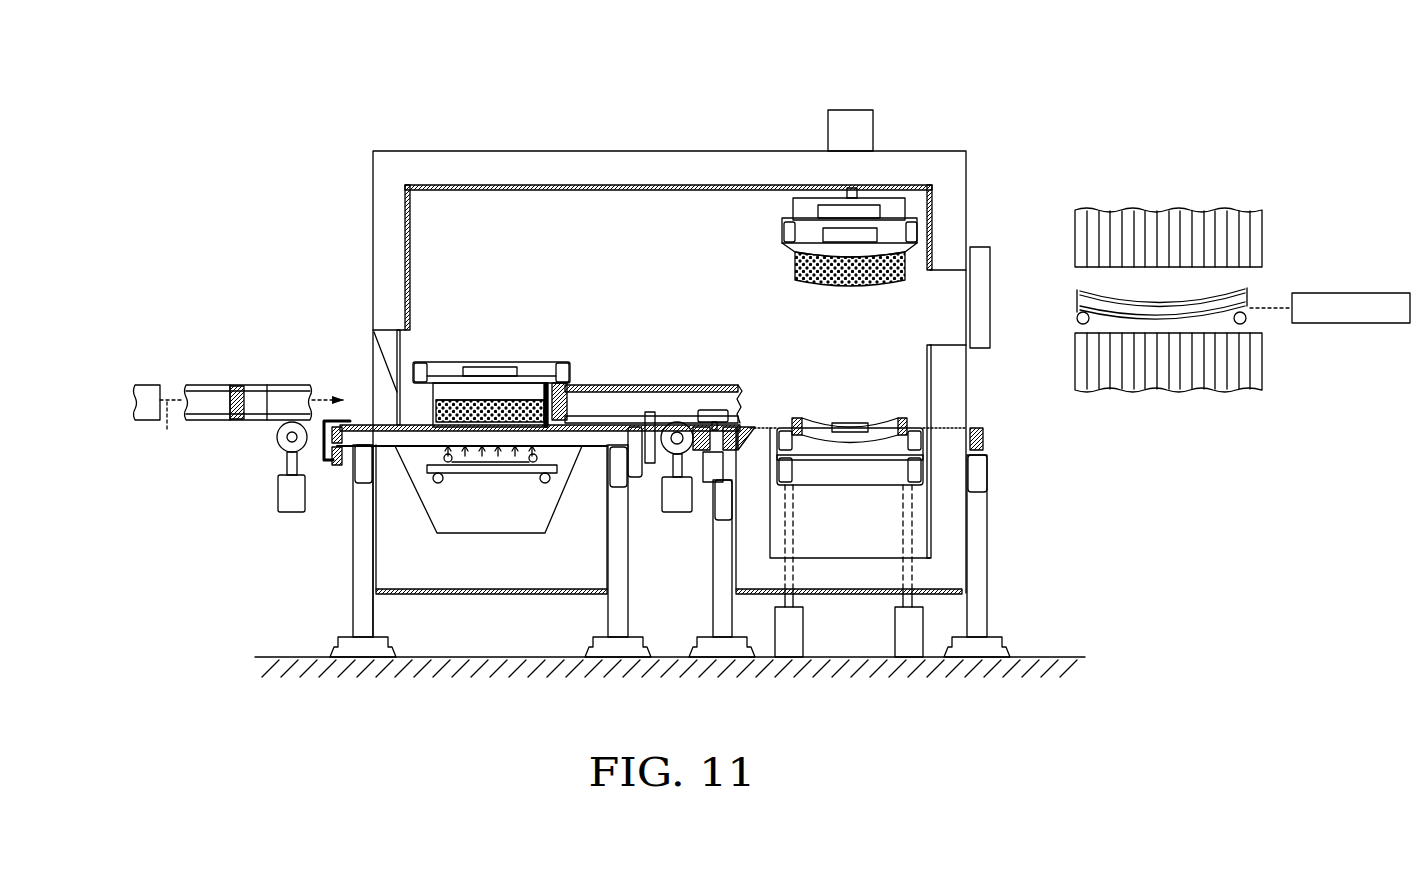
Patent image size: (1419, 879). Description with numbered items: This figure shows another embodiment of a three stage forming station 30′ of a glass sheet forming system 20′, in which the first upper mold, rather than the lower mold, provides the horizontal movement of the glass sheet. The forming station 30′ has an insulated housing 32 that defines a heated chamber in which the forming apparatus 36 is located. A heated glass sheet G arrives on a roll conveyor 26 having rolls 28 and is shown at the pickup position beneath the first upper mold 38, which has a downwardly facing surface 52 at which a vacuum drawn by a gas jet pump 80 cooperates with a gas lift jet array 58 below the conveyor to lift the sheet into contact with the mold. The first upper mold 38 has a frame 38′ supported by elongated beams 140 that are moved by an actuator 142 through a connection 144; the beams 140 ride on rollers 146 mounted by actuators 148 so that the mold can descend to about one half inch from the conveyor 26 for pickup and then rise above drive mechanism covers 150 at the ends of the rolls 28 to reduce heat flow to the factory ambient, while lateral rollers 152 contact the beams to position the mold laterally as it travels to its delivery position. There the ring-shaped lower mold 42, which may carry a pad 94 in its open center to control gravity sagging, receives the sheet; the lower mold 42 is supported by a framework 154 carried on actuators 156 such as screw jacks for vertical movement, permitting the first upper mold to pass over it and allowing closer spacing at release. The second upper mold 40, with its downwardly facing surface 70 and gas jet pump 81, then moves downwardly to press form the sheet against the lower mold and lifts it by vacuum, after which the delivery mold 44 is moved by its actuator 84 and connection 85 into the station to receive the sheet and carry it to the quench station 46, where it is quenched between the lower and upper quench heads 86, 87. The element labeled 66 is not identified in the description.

The glass sheet forming system 20′ is at (418, 120).
The three stage forming station 30′ is at (552, 146).
The insulated housing 32 is at (684, 146).
The forming apparatus 36 is at (700, 213).
The actuator 66 is at (878, 128).
The gas jet pump 81 is at (870, 205).
The second upper mold 40 is at (828, 230).
The downwardly facing surface 70 is at (855, 289).
The lower mold 42 is at (837, 479).
The pad 94 is at (858, 420).
The actuators 156 is at (895, 633).
The framework 154 is at (932, 453).
The rolls 28 is at (390, 433).
The conveyor 26 is at (604, 385).
The drive mechanism covers 150 is at (357, 417).
The lateral rollers 152 is at (713, 410).
The gas jet pump 80 is at (493, 362).
The frame 38′ is at (578, 362).
The first upper mold 38 is at (440, 368).
The downwardly facing surface 52 is at (534, 418).
The glass sheet G is at (499, 392).
The gas lift jet array 58 is at (428, 457).
The actuator 142 is at (142, 385).
The connection 144 is at (167, 432).
The elongated beams 140 is at (245, 385).
The rollers 146 is at (278, 440).
The actuators 148 is at (282, 490).
The quench station 46 is at (1242, 283).
The upper quench head 87 is at (1262, 237).
The lower quench head 86 is at (1262, 378).
The delivery mold 44 is at (1250, 320).
The actuator 84 is at (1350, 293).
The connection 85 is at (1270, 307).